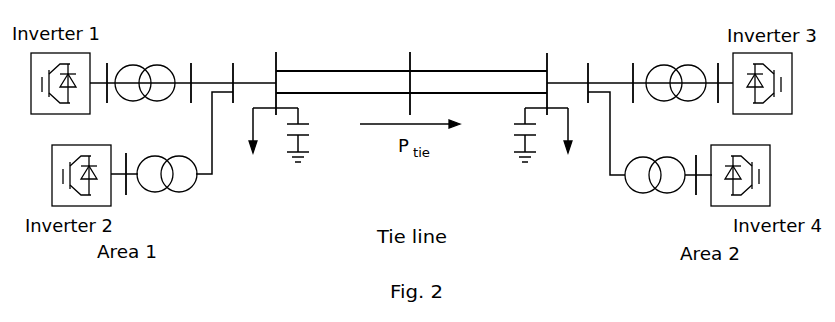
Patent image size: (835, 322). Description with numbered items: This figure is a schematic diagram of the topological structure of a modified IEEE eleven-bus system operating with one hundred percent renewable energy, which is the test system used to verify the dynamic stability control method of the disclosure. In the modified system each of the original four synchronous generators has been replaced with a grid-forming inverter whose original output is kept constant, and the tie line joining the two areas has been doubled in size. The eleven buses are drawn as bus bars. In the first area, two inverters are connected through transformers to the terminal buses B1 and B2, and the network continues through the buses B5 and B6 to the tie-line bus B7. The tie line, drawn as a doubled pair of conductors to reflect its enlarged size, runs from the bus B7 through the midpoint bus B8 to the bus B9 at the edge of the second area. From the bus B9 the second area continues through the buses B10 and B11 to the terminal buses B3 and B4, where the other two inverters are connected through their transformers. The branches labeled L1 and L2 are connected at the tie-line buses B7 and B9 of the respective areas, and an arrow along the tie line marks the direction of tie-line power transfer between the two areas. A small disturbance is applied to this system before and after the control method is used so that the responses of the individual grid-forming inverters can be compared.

The bus B1 (Inverter 1 terminal bus) B1 is at (108, 72).
The bus B2 (Inverter 2 terminal bus) B2 is at (134, 188).
The bus B3 (Inverter 3 terminal bus) B3 is at (712, 72).
The bus B4 (Inverter 4 terminal bus) B4 is at (696, 189).
The bus B5 is at (192, 72).
The bus B6 is at (229, 72).
The bus B7 (Area 1 tie-line bus) B7 is at (275, 73).
The bus B8 (tie-line midpoint bus) B8 is at (410, 73).
The bus B9 (Area 2 tie-line bus) B9 is at (547, 75).
The bus B10 is at (591, 72).
The bus B11 is at (636, 72).
The load L1 in Area 1 L1 is at (255, 142).
The load L2 in Area 2 L2 is at (570, 142).